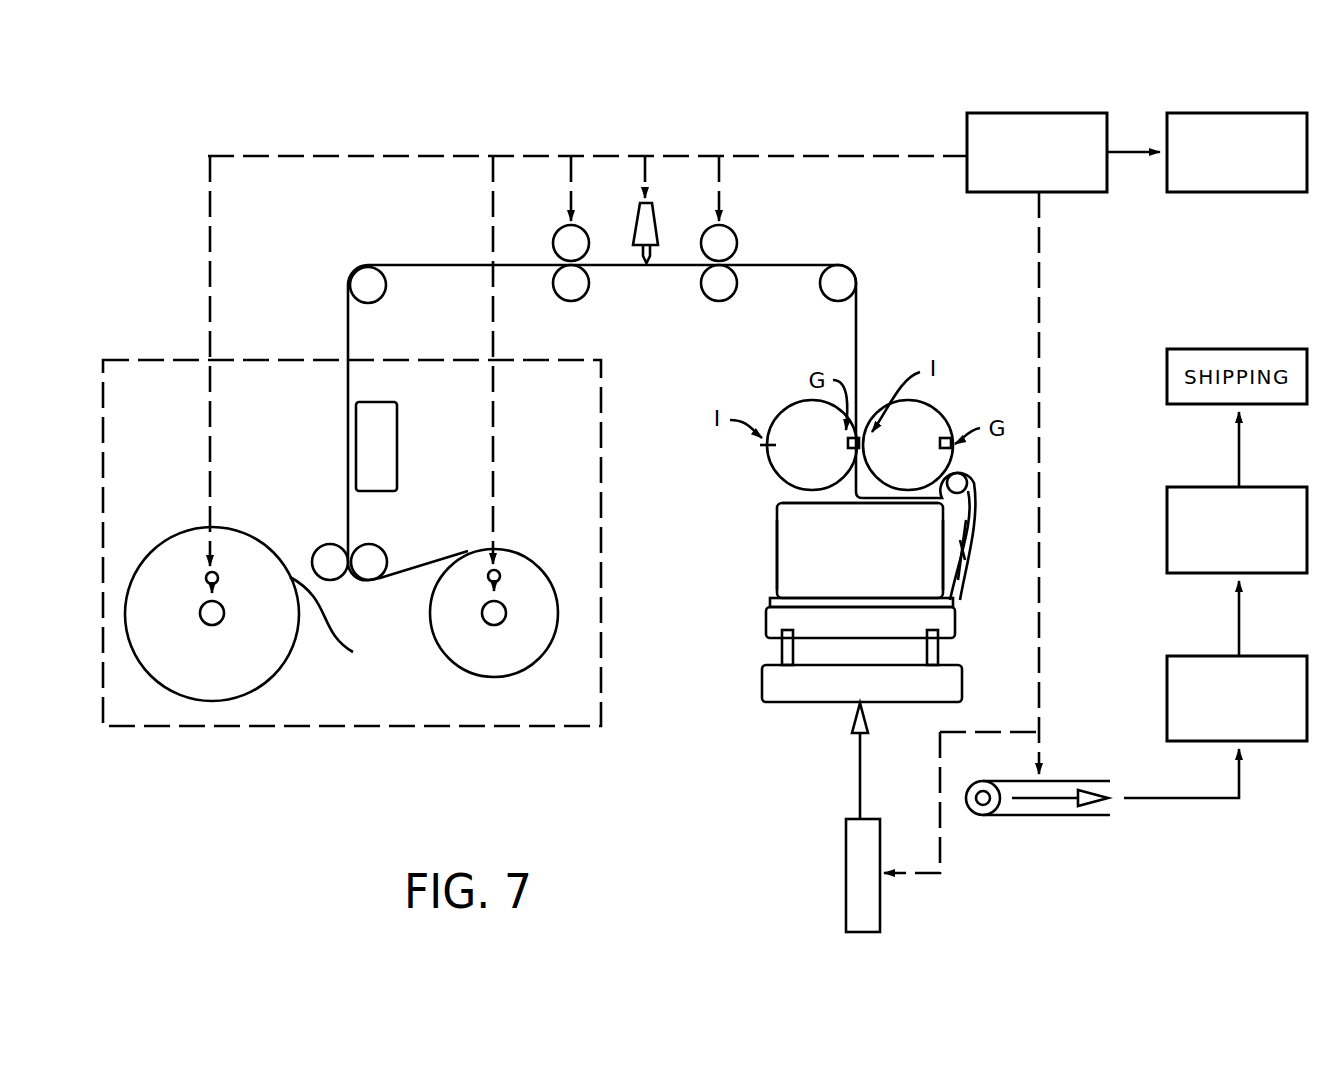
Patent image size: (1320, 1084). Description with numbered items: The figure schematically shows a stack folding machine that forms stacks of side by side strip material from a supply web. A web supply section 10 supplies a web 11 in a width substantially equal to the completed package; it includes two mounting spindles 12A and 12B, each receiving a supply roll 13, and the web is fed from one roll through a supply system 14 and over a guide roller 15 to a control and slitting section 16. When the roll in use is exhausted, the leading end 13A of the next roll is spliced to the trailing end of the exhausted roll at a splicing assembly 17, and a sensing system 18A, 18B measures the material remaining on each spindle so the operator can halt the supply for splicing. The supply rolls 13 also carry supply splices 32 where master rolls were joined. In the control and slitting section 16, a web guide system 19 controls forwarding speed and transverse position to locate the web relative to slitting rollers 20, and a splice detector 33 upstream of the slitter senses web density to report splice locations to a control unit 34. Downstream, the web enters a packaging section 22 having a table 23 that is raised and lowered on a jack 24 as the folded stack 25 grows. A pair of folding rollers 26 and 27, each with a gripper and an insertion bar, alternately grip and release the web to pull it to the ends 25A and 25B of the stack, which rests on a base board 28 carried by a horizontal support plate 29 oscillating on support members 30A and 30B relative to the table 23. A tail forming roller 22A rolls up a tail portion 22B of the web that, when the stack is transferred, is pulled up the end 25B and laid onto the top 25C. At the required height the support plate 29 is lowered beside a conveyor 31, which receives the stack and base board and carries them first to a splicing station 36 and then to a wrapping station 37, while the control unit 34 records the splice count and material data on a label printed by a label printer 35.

The web supply section 10 is at (176, 352).
The web 11 is at (342, 325).
The mounting spindle 12A is at (216, 620).
The mounting spindle 12B is at (480, 612).
The supply roll 13 is at (252, 705).
The leading end 13A is at (364, 651).
The supply system 14 is at (322, 536).
The guide roller 15 is at (374, 288).
The control and slitting section 16 is at (694, 135).
The splicing assembly 17 is at (390, 450).
The sensing system 18A is at (202, 574).
The sensing system 18B is at (504, 574).
The web guide system 19 is at (578, 290).
The slitting rollers 20 is at (720, 290).
The packaging section 22 is at (1004, 539).
The tail forming roller 22A is at (968, 488).
The tail portion 22B is at (976, 560).
The table 23 is at (760, 700).
The jack 24 is at (842, 850).
The folded stack 25 is at (772, 538).
The end of stack 25A is at (776, 565).
The end of stack 25B is at (955, 562).
The top of stack 25C is at (780, 497).
The folding roller 26 is at (784, 398).
The folding roller 27 is at (942, 400).
The base board 28 is at (768, 600).
The horizontal support plate 29 is at (958, 620).
The support member 30A is at (780, 652).
The support member 30B is at (942, 655).
The conveyor 31 is at (1070, 774).
The supply splice 32 is at (170, 614).
The splice detector 33 is at (636, 206).
The control unit 34 is at (978, 108).
The label printer 35 is at (1226, 108).
The splicing station 36 is at (1212, 650).
The wrapping station 37 is at (1212, 480).